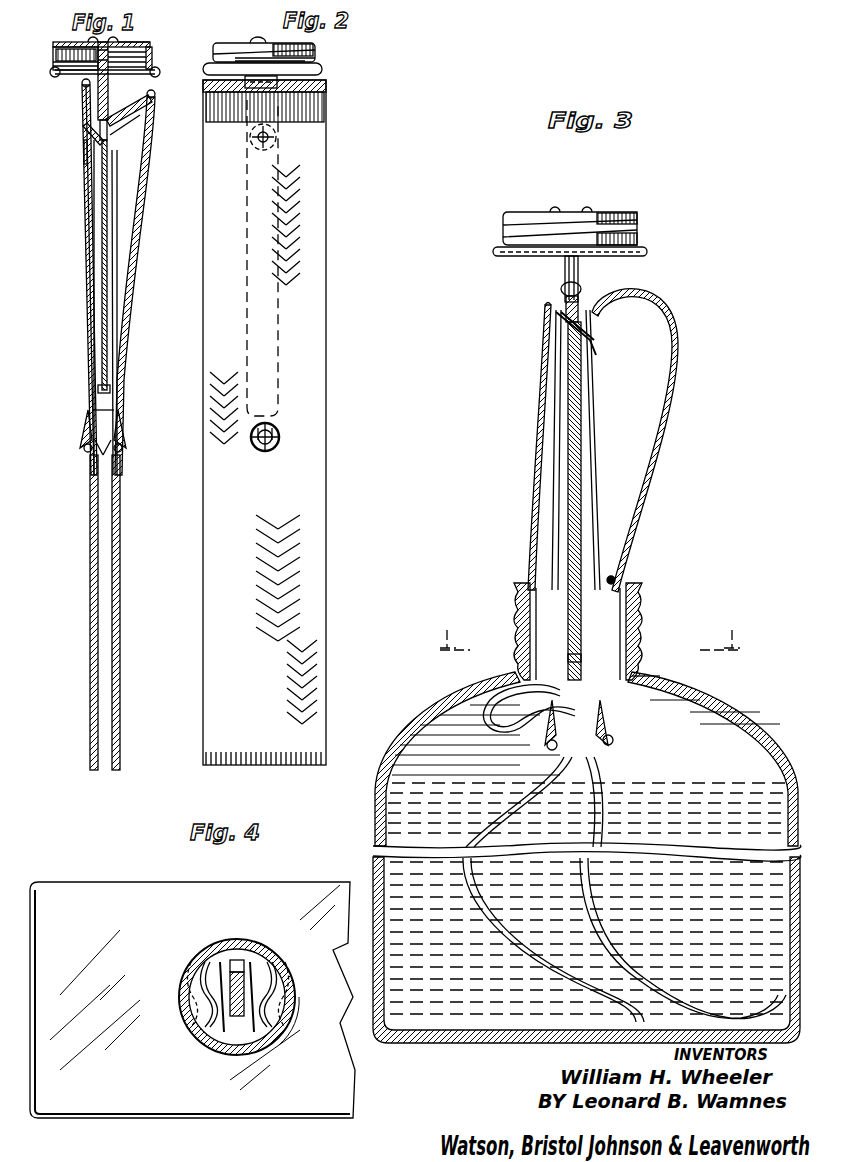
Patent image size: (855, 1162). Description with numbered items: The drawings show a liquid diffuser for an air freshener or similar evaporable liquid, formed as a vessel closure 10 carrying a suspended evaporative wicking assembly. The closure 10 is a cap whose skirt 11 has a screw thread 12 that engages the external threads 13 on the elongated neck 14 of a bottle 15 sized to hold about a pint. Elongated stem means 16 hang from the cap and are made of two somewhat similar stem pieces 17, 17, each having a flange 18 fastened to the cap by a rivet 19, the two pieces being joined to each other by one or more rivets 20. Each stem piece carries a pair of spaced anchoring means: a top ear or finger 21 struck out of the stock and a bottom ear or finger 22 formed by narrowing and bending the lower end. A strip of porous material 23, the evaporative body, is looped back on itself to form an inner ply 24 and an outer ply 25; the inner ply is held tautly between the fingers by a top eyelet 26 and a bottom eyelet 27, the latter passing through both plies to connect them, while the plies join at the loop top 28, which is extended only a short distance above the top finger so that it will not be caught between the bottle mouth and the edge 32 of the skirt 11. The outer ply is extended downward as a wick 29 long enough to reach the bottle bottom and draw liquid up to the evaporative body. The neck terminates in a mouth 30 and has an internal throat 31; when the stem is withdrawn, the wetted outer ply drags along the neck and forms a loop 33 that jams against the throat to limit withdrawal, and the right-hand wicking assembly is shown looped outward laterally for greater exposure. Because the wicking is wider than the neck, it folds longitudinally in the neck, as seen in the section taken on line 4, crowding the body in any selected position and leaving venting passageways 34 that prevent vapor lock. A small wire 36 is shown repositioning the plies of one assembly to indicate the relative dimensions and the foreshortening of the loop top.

In FIG. 1, the vessel closure 10 is at (152, 48).
In FIG. 2, the vessel closure 10 is at (305, 46).
In FIG. 3, the vessel closure 10 is at (638, 213).
In FIG. 1, the skirt 11 is at (152, 62).
In FIG. 2, the skirt 11 is at (316, 60).
In FIG. 3, the skirt 11 is at (638, 240).
In FIG. 1, the screw thread 12 is at (150, 76).
In FIG. 3, the screw thread 12 is at (638, 226).
In FIG. 3, the external threads 13 is at (644, 612).
In FIG. 3, the neck 14 is at (644, 592).
In FIG. 4, the neck 14 is at (200, 962).
In FIG. 3, the bottle 15 is at (740, 700).
In FIG. 4, the bottle 15 is at (84, 882).
In FIG. 1, the stem means 16 is at (108, 88).
In FIG. 2, the stem means 16 is at (322, 72).
In FIG. 3, the stem means 16 is at (556, 290).
In FIG. 4, the stem means 16 is at (245, 966).
In FIG. 1, the stem pieces 17 is at (53, 56).
In FIG. 2, the stem pieces 17 is at (280, 345).
In FIG. 3, the stem pieces 17 is at (595, 268).
In FIG. 1, the flange 18 is at (128, 44).
In FIG. 1, the rivet 19 is at (88, 42).
In FIG. 2, the rivet 19 is at (252, 43).
In FIG. 3, the rivet 19 is at (587, 212).
In FIG. 1, the rivets 20 is at (112, 390).
In FIG. 3, the rivets 20 is at (581, 660).
In FIG. 1, the top ear or finger 21 is at (158, 150).
In FIG. 2, the top ear or finger 21 is at (276, 137).
In FIG. 1, the bottom ear or finger 22 is at (125, 450).
In FIG. 2, the bottom ear or finger 22 is at (280, 437).
In FIG. 3, the bottom ear or finger 22 is at (630, 738).
In FIG. 1, the strip of porous material 23 is at (140, 308).
In FIG. 2, the strip of porous material 23 is at (326, 268).
In FIG. 1, the inner ply 24 is at (118, 228).
In FIG. 3, the inner ply 24 is at (612, 415).
In FIG. 4, the inner ply 24 is at (292, 947).
In FIG. 1, the outer ply 25 is at (134, 272).
In FIG. 2, the outer ply 25 is at (310, 222).
In FIG. 3, the outer ply 25 is at (690, 418).
In FIG. 4, the outer ply 25 is at (290, 982).
In FIG. 1, the top eyelet 26 is at (84, 155).
In FIG. 1, the bottom eyelet 27 is at (125, 425).
In FIG. 2, the bottom eyelet 27 is at (276, 428).
In FIG. 3, the bottom eyelet 27 is at (606, 712).
In FIG. 1, the loop top 28 is at (172, 112).
In FIG. 2, the loop top 28 is at (322, 84).
In FIG. 1, the wick 29 is at (120, 610).
In FIG. 2, the wick 29 is at (314, 608).
In FIG. 3, the wick 29 is at (620, 770).
In FIG. 3, the mouth 30 is at (615, 578).
In FIG. 3, the throat 31 is at (640, 680).
In FIG. 1, the edge of the skirt 32 is at (160, 72).
In FIG. 3, the edge of the skirt 32 is at (642, 256).
In FIG. 3, the loop 33 is at (470, 693).
In FIG. 4, the venting passageways 34 is at (283, 1000).
In FIG. 1, the wire 36 is at (128, 130).
In FIG. 3, the section line 4— 4 is at (583, 638).